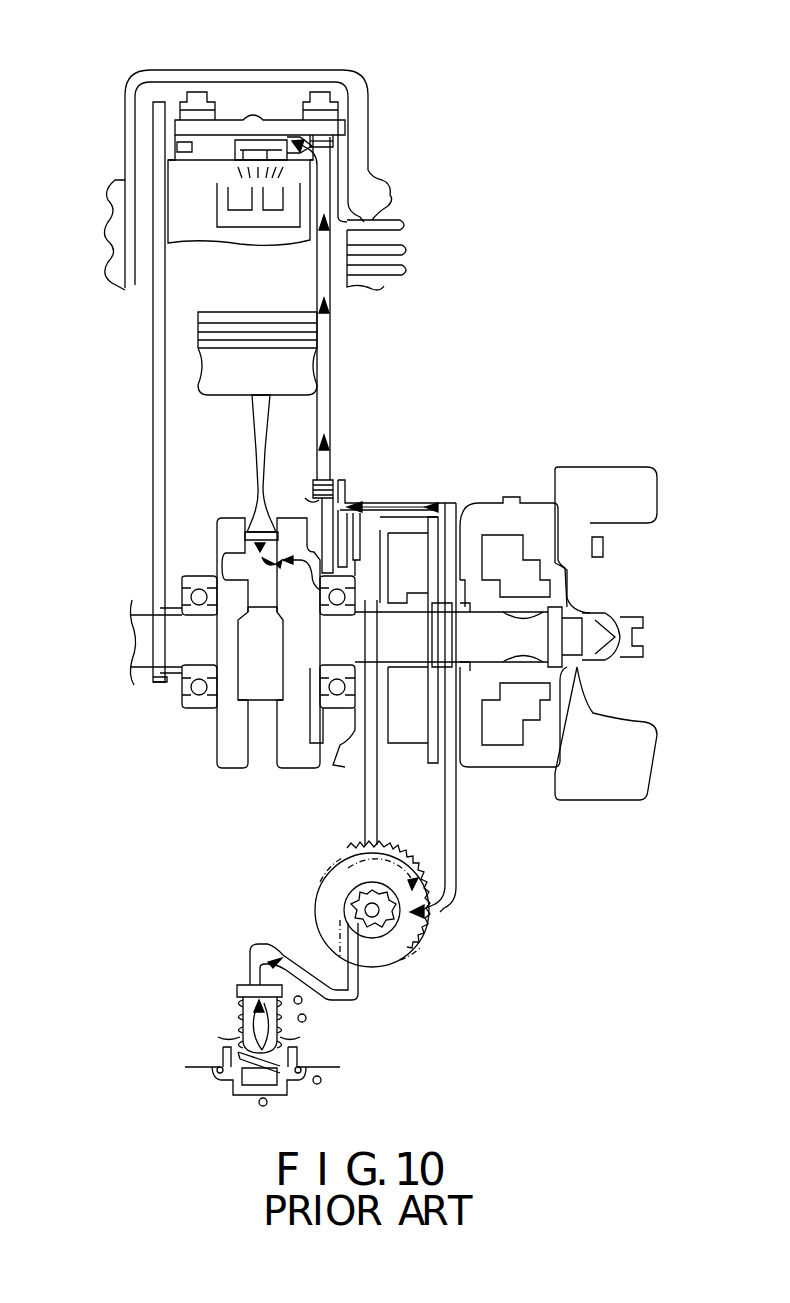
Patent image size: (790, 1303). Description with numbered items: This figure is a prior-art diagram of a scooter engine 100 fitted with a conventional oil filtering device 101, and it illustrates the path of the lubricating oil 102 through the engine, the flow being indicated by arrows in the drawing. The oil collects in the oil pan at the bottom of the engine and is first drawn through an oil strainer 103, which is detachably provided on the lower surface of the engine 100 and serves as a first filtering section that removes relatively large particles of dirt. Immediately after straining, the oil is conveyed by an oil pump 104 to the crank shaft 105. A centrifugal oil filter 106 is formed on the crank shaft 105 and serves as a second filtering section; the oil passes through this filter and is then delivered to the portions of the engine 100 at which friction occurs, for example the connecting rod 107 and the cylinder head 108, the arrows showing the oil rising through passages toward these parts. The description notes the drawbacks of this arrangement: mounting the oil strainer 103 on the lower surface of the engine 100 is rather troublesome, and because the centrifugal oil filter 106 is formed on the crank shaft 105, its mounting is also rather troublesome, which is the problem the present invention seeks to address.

The engine 100 is at (368, 79).
The oil filtering device 101 is at (228, 457).
The lubricating oil 102 is at (331, 377).
The oil strainer 103 is at (235, 1012).
The oil pump 104 is at (380, 968).
The crank shaft 105 is at (185, 645).
The centrifugal oil filter 106 is at (364, 532).
The connecting rod 107 is at (252, 427).
The cylinder head 108 is at (340, 142).